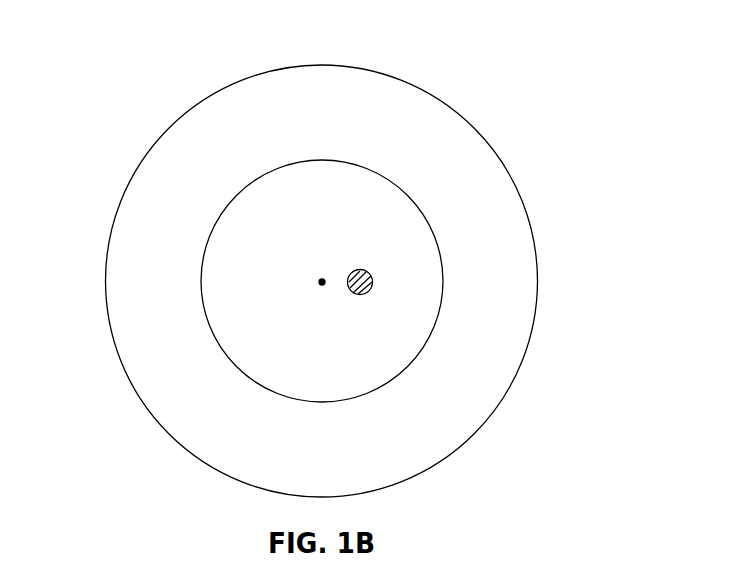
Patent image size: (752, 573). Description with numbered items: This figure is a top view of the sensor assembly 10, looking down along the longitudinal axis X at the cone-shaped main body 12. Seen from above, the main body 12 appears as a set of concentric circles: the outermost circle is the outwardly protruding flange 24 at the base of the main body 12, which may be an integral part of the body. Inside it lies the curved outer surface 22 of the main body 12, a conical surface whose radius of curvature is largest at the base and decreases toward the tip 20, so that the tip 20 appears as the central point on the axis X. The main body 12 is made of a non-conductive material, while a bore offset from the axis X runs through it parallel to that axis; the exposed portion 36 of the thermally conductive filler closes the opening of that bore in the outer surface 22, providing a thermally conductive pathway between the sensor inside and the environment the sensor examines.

The sensor assembly 10 is at (82, 65).
The main body 12 is at (387, 192).
The tip 20 is at (321, 279).
The outer surface 22 is at (345, 226).
The flange 24 is at (525, 198).
The exposed portion of the filler 36 is at (368, 290).